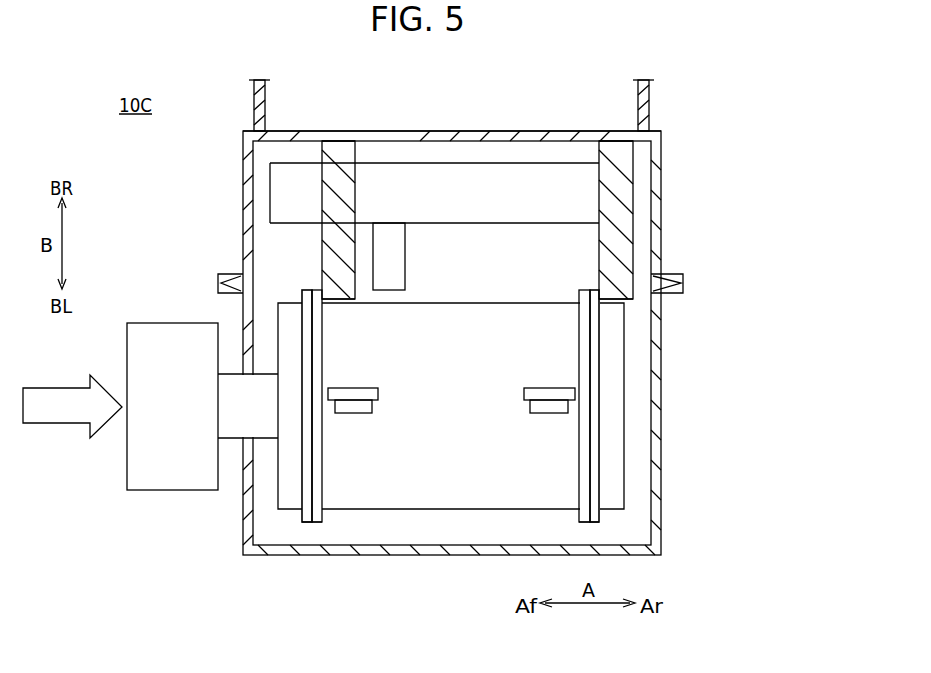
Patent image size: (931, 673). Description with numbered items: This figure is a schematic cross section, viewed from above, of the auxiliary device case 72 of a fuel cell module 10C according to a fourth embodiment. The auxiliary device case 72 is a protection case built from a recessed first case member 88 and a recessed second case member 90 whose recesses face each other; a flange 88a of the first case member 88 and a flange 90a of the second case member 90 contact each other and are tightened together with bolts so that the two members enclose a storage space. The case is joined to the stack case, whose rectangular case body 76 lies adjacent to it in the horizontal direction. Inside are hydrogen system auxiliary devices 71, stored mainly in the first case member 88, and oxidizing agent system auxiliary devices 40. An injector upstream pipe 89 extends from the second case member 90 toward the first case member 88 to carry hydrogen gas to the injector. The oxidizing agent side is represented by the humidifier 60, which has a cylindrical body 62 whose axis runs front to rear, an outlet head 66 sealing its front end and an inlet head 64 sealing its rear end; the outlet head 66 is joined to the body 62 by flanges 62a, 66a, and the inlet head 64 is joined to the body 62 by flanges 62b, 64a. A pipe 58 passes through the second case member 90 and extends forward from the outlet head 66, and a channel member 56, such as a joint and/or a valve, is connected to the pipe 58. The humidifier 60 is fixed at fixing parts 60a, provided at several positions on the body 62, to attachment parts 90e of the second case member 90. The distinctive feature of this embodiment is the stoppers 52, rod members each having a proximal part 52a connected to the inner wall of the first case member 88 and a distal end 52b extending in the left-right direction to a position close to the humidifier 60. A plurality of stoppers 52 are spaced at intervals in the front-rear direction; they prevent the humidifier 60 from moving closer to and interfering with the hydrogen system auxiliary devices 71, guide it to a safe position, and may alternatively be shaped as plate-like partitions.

The fuel cell module 10C is at (353, 317).
The oxidizing agent system auxiliary devices 40 is at (636, 440).
The stopper 52 is at (340, 150).
The proximal part 52a is at (348, 140).
The distal end 52b is at (348, 304).
The channel member 56 is at (160, 345).
The pipe 58 is at (236, 401).
The humidifier 60 is at (433, 514).
The fixing parts 60a is at (345, 414).
The body 62 is at (497, 322).
The flange 62a is at (318, 486).
The flange 62b is at (586, 478).
The inlet head 64 is at (618, 375).
The flange 64a is at (598, 468).
The outlet head 66 is at (292, 498).
The flange 66a is at (307, 523).
The hydrogen system auxiliary devices 71 is at (484, 160).
The auxiliary device case 72 is at (664, 133).
The case body 76 is at (254, 100).
The first case member 88 is at (656, 168).
The flange 88a is at (665, 272).
The injector upstream pipe 89 is at (394, 262).
The second case member 90 is at (656, 398).
The flange 90a is at (666, 296).
The attachment parts 90e is at (360, 389).